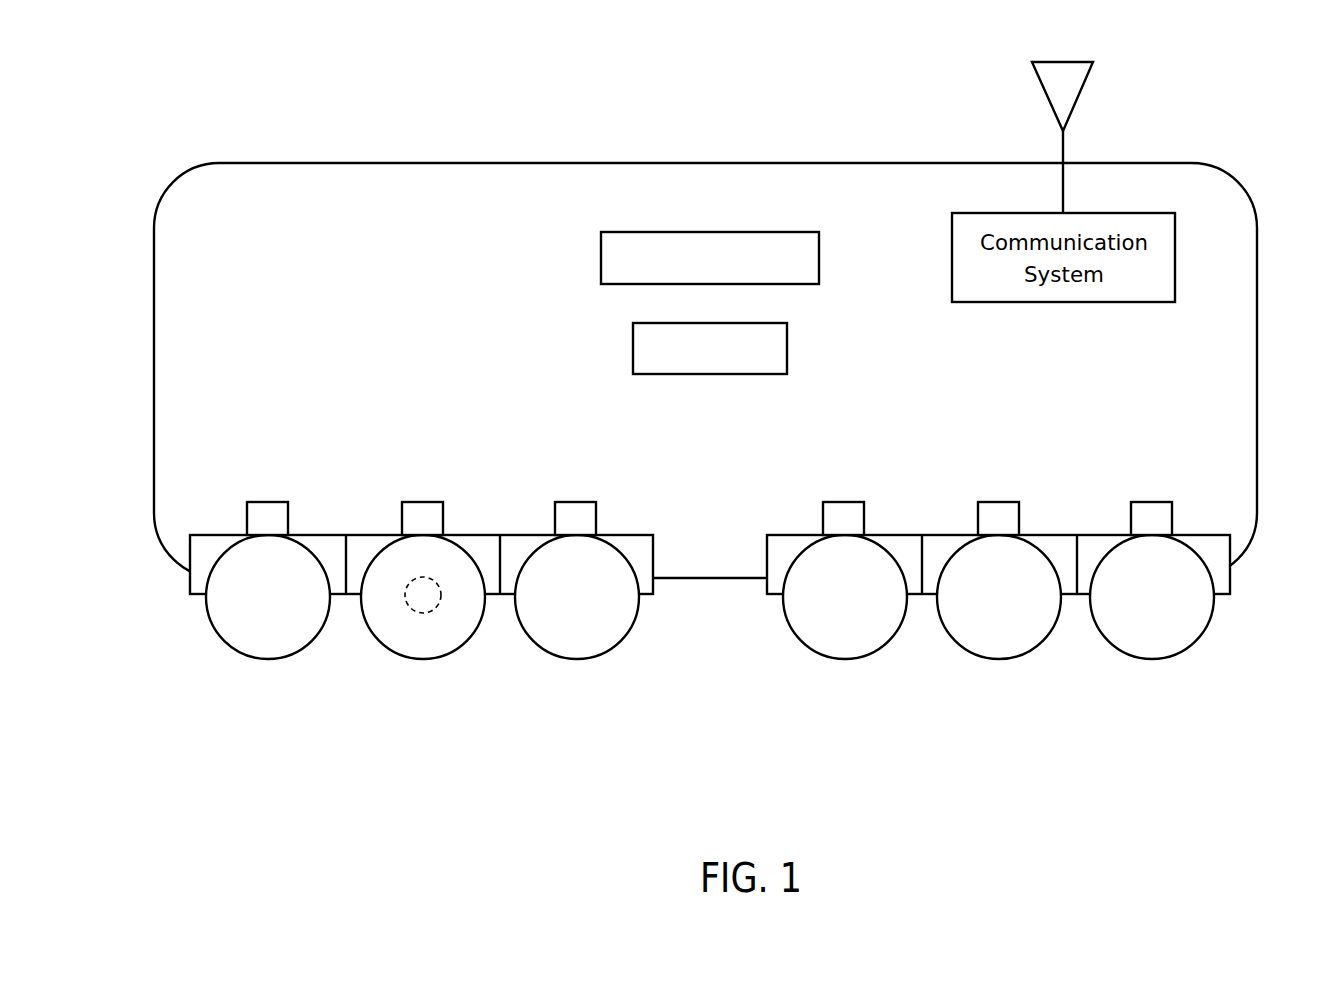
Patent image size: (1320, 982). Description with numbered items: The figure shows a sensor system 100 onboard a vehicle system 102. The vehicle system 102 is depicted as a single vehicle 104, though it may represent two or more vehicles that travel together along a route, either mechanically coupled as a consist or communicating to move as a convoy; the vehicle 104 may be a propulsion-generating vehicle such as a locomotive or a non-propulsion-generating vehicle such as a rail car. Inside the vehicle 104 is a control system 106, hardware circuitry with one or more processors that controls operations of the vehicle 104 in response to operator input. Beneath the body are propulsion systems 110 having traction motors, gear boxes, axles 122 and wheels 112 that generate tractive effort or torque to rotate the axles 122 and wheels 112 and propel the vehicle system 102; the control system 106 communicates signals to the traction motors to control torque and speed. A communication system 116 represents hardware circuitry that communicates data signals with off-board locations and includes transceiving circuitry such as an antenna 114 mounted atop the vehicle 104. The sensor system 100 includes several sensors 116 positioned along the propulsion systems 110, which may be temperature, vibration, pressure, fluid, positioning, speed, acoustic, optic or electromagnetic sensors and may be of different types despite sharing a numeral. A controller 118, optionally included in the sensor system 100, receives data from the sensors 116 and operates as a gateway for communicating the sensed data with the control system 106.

The sensor system 100 is at (1230, 678).
The vehicle system 102 is at (147, 32).
The vehicle 104 is at (1233, 175).
The control system 106 is at (820, 258).
The propulsion system 110 is at (640, 535).
The wheel 112 is at (870, 657).
The antenna 114 is at (1080, 92).
The sensor 116 is at (267, 502).
The controller 118 is at (788, 350).
The axle 122 is at (437, 607).